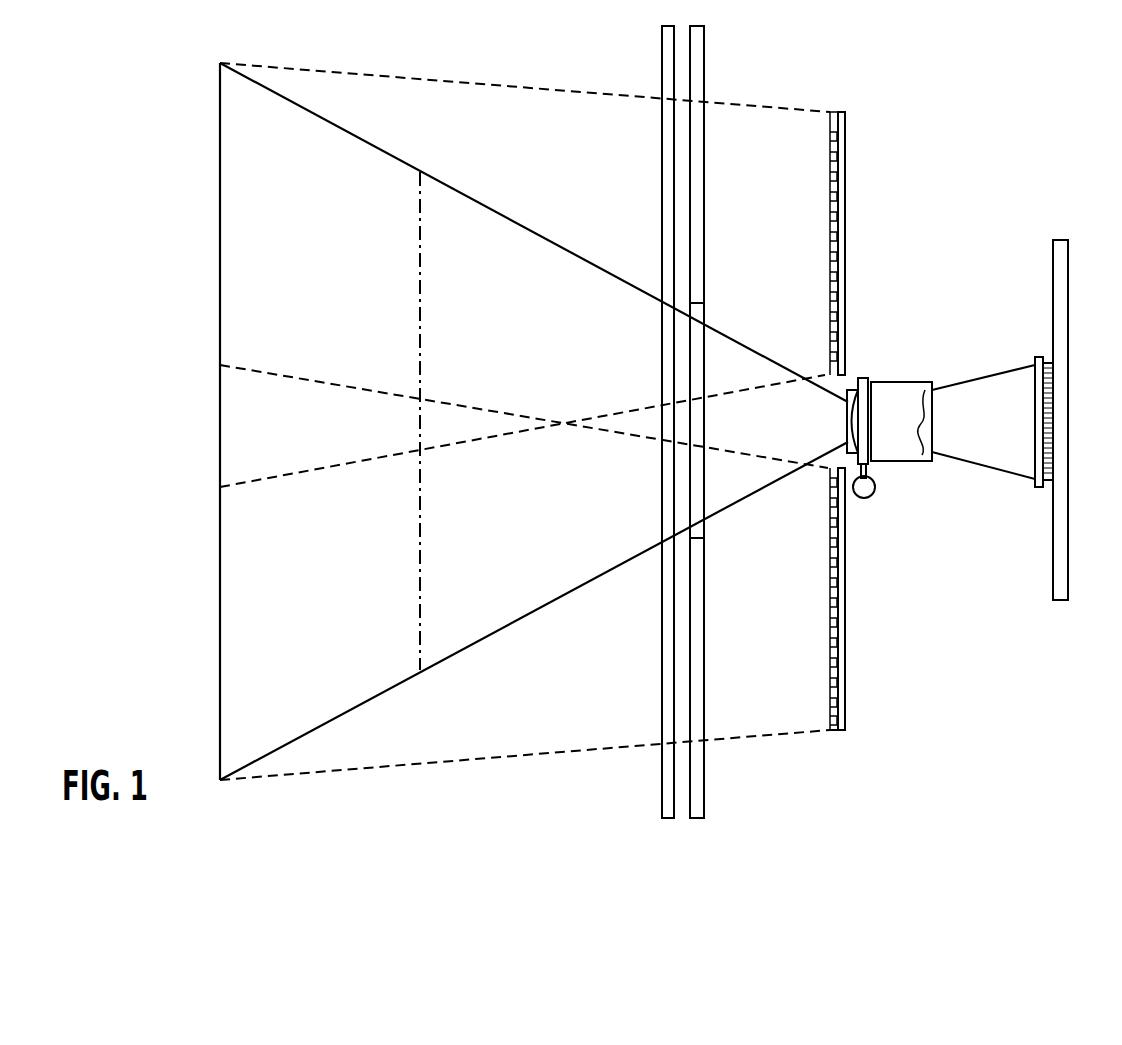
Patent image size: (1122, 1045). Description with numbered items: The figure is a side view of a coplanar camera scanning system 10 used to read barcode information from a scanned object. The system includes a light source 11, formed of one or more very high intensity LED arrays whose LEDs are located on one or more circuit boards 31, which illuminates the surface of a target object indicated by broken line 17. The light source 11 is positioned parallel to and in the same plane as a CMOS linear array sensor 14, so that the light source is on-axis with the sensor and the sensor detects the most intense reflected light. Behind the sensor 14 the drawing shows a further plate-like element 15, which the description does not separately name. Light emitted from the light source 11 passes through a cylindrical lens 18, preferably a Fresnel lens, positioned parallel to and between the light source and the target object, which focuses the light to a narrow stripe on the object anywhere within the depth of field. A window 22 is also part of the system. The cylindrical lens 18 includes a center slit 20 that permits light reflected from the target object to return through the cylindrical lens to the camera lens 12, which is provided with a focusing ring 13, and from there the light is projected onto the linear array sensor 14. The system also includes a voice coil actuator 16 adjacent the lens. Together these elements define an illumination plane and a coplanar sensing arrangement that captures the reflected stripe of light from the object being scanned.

The coplanar camera scanning system 10 is at (952, 202).
The light source 11 is at (842, 112).
The camera lens 12 is at (900, 382).
The focusing ring 13 is at (862, 378).
The linear array sensor 14 is at (1010, 366).
The display screen 15 is at (1060, 602).
The voice coil actuator 16 is at (868, 498).
The broken line 17 is at (420, 610).
The cylindrical lens 18 is at (704, 32).
The center slit 20 is at (704, 540).
The window 22 is at (662, 798).
The circuit board 31 is at (838, 730).